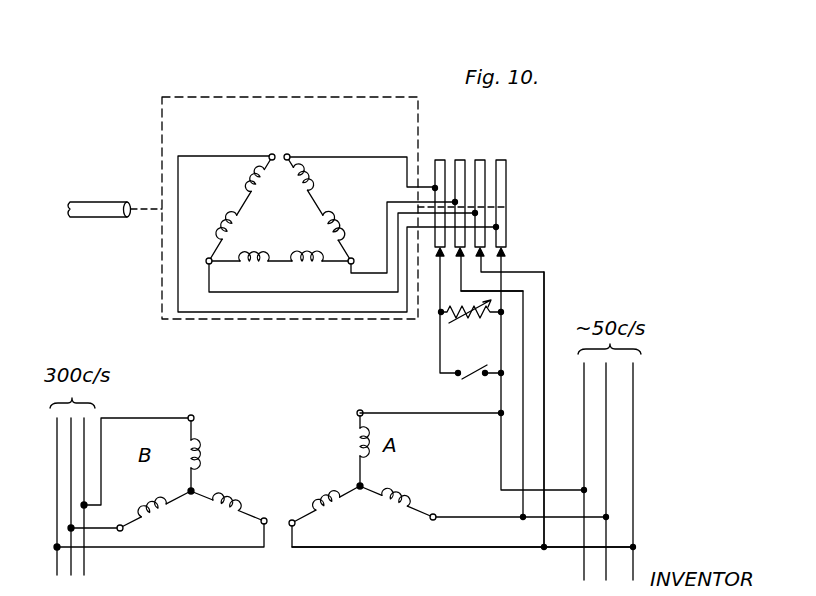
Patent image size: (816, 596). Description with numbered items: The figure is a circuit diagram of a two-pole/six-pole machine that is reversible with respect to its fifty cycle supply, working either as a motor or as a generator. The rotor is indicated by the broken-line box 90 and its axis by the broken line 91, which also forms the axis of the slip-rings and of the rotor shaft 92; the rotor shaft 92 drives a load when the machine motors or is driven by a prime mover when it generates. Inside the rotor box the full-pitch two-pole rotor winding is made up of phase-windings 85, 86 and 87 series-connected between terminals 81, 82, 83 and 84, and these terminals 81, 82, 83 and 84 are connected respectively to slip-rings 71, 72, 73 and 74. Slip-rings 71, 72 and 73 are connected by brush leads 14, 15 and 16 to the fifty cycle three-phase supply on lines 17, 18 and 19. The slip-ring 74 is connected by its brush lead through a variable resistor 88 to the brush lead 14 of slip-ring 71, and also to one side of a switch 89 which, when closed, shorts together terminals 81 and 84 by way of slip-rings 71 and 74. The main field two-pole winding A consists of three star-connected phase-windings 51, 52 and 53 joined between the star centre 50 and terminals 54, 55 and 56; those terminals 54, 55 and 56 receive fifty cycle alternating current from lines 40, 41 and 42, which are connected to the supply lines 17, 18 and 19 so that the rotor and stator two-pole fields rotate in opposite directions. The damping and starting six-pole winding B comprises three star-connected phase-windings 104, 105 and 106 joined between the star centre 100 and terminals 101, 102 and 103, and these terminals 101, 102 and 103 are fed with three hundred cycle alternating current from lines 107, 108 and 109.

The rotor 90 is at (326, 96).
The terminal 81 is at (270, 153).
The terminal 84 is at (289, 153).
The terminal 82 is at (208, 258).
The terminal 83 is at (354, 258).
The phase-winding 85 is at (248, 183).
The phase-winding 87 is at (320, 188).
The phase-winding 86 is at (258, 265).
The rotor shaft 92 is at (97, 210).
The rotor axis 91 is at (146, 213).
The slip-ring 74 is at (437, 158).
The slip-ring 73 is at (458, 159).
The slip-ring 72 is at (481, 158).
The slip-ring 71 is at (502, 158).
The brush lead 15 is at (511, 290).
The brush lead 16 is at (544, 282).
The variable resistor 88 is at (471, 326).
The brush lead 14 is at (500, 332).
The switch 89 is at (432, 402).
The line 40 is at (452, 414).
The line 17 is at (584, 413).
The line 18 is at (606, 441).
The line 19 is at (633, 464).
The line 109 is at (57, 432).
The line 108 is at (71, 445).
The line 107 is at (84, 456).
The terminal 101 is at (201, 418).
The phase-winding 104 is at (204, 448).
The star centre 100 is at (205, 488).
The phase-winding 105 is at (152, 499).
The phase-winding 106 is at (224, 523).
The terminal 102 is at (128, 530).
The terminal 103 is at (268, 513).
The terminal 54 is at (359, 406).
The phase-winding 51 is at (353, 440).
The star centre 50 is at (367, 483).
The phase-winding 53 is at (338, 497).
The phase-winding 52 is at (407, 502).
The terminal 56 is at (298, 526).
The terminal 55 is at (425, 520).
The line 41 is at (494, 516).
The line 42 is at (460, 546).